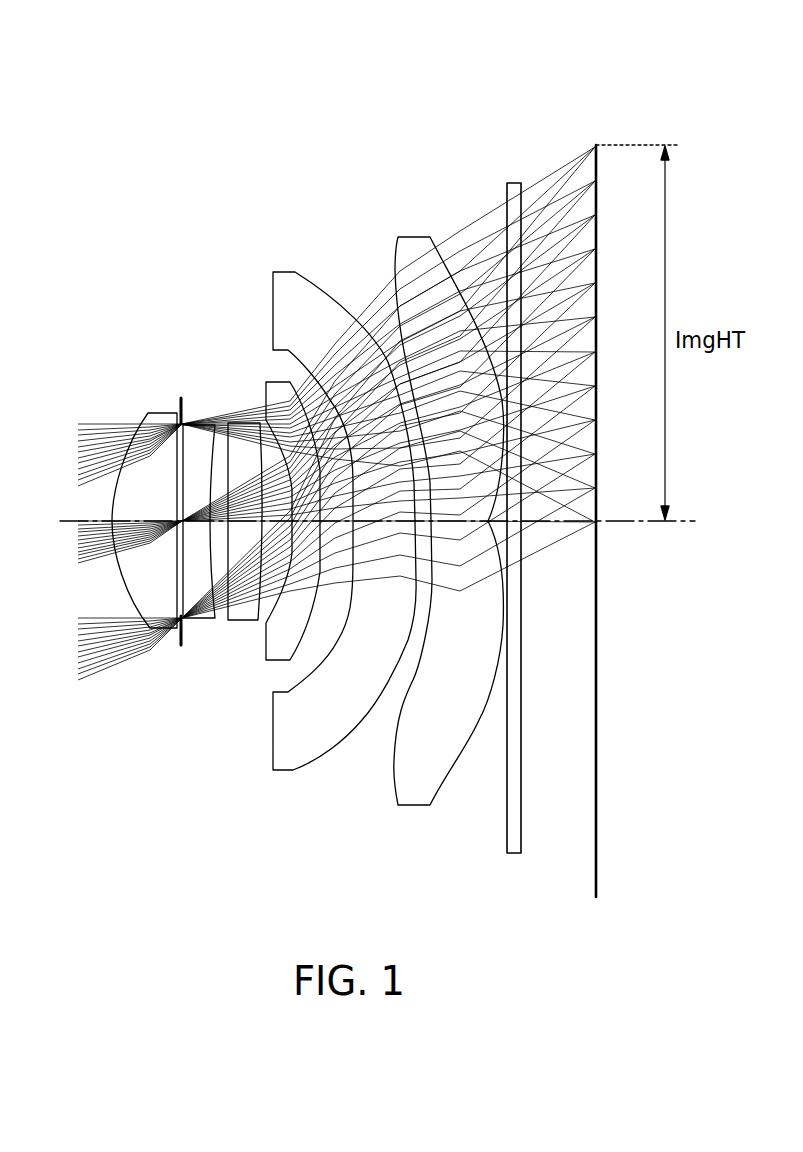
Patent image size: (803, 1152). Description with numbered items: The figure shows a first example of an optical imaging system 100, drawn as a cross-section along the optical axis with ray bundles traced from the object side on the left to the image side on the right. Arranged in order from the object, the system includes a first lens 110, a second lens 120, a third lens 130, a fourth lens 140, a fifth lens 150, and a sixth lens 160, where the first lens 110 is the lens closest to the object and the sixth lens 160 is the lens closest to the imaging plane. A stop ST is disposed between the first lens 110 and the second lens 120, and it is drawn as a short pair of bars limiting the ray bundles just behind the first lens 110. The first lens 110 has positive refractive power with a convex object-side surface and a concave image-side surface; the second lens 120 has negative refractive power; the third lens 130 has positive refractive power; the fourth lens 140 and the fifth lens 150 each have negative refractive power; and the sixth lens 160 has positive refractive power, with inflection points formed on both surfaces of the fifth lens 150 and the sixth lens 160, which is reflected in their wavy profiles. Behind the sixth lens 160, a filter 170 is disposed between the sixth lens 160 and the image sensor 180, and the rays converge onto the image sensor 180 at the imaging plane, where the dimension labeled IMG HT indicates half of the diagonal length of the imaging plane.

The optical imaging system 100 is at (178, 192).
The first lens 110 is at (138, 598).
The stop ST is at (183, 398).
The second lens 120 is at (202, 619).
The third lens 130 is at (242, 621).
The fourth lens 140 is at (268, 662).
The fifth lens 150 is at (293, 772).
The sixth lens 160 is at (418, 806).
The filter 170 is at (517, 855).
The image sensor 180 is at (597, 899).